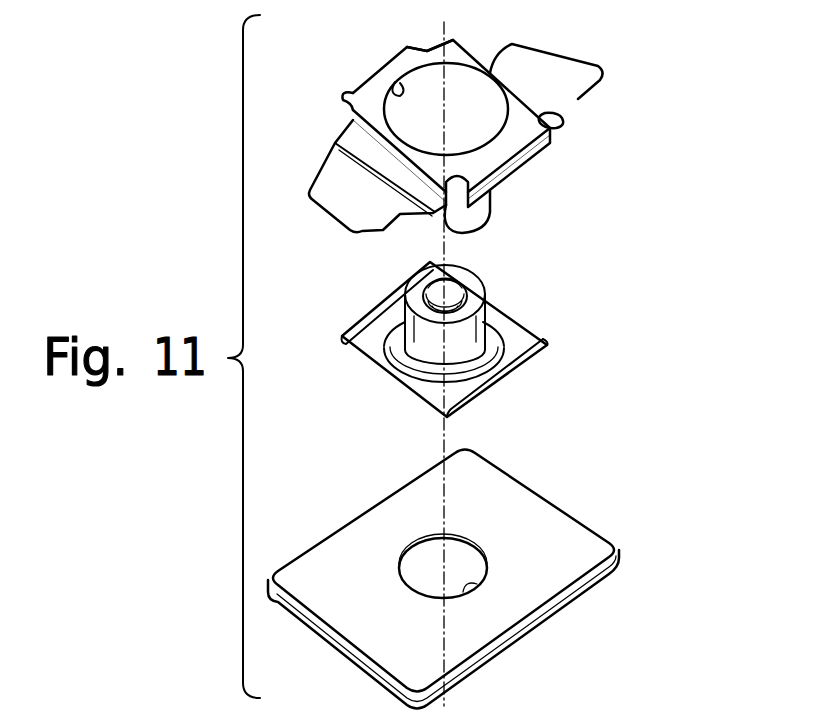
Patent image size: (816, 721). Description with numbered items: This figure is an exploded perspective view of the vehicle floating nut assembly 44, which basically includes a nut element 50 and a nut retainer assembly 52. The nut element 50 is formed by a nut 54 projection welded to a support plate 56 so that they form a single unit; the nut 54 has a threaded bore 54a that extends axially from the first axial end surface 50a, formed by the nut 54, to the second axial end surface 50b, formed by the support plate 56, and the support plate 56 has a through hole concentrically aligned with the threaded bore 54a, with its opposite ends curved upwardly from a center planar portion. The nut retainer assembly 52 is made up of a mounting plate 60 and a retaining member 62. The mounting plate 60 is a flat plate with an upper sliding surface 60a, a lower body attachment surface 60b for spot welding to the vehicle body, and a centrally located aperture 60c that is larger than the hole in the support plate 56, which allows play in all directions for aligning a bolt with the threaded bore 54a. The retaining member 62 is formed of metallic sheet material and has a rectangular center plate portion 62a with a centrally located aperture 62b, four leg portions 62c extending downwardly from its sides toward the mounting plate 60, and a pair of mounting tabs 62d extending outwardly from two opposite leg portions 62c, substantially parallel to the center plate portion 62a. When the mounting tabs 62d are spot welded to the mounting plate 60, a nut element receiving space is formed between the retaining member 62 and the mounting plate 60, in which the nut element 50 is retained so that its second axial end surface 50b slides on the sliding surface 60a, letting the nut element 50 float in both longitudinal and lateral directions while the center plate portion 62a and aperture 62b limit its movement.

The vehicle floating nut assembly 44 is at (637, 147).
The nut element 50 is at (572, 256).
The first axial end surface 50a is at (462, 265).
The second axial end surface 50b is at (500, 382).
The nut retainer assembly 52 is at (692, 262).
The nut 54 is at (477, 282).
The threaded bore 54a is at (430, 294).
The support plate 56 is at (517, 338).
The mounting plate 60 is at (553, 485).
The upper sliding surface 60a is at (568, 540).
The lower body attachment surface 60b is at (590, 590).
The aperture 60c is at (477, 587).
The retaining member 62 is at (541, 170).
The center plate portion 62a is at (520, 110).
The aperture 62b is at (395, 83).
The leg portions 62c is at (462, 42).
The mounting tabs 62d is at (517, 65).